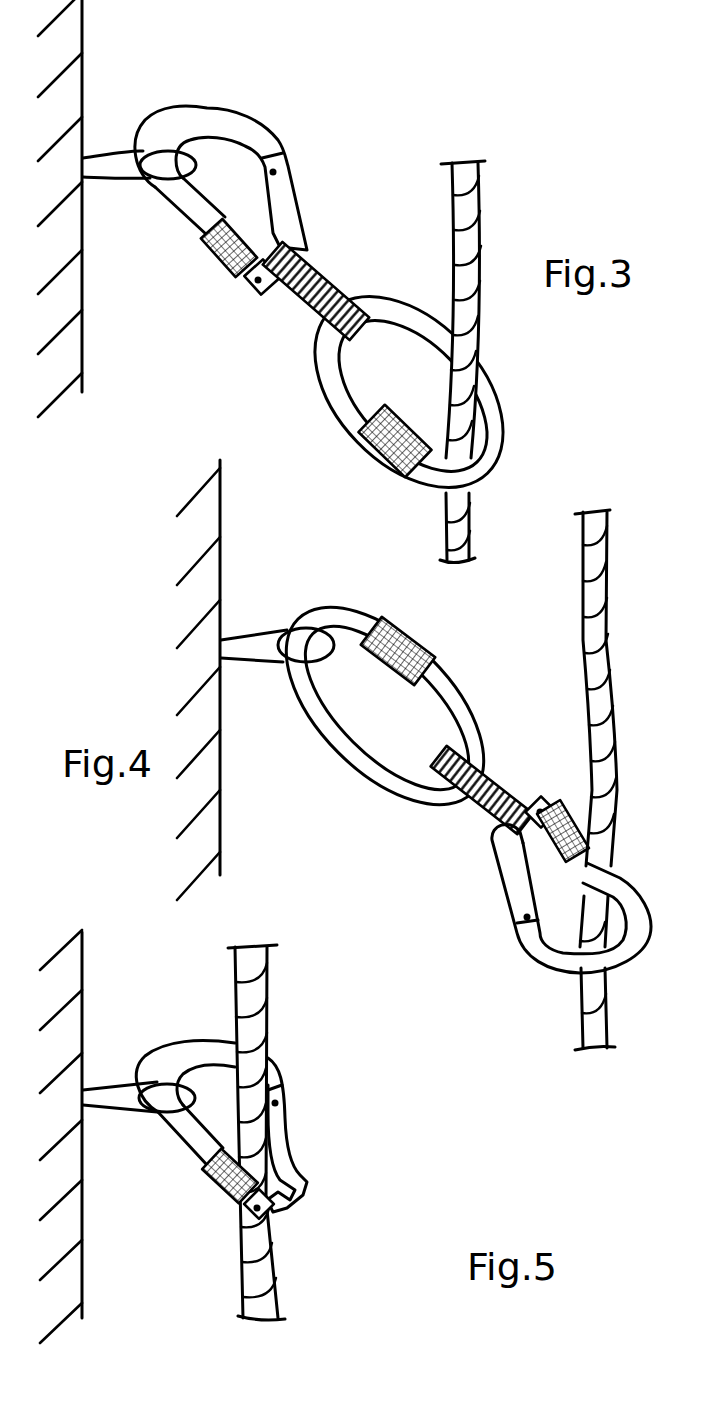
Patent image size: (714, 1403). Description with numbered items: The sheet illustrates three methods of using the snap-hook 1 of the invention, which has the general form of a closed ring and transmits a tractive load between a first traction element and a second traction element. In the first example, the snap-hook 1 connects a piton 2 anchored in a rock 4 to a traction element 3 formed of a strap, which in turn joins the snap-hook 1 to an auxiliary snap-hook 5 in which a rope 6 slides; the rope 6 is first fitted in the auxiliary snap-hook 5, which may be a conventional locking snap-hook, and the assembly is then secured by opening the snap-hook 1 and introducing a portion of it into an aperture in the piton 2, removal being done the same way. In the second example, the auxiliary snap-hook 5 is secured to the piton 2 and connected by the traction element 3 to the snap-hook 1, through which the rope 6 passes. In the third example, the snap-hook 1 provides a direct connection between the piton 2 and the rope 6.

In FIG. 3, the snap-hook 1 is at (257, 132).
In FIG. 4, the snap-hook 1 is at (513, 870).
In FIG. 5, the snap-hook 1 is at (214, 1186).
In FIG. 3, the piton 2 is at (127, 157).
In FIG. 4, the piton 2 is at (250, 656).
In FIG. 5, the piton 2 is at (103, 1090).
In FIG. 3, the traction element 3 is at (330, 247).
In FIG. 4, the traction element 3 is at (463, 813).
In FIG. 3, the rock 4 is at (75, 143).
In FIG. 4, the rock 4 is at (203, 772).
In FIG. 5, the rock 4 is at (73, 1203).
In FIG. 3, the auxiliary snap-hook 5 is at (380, 307).
In FIG. 4, the auxiliary snap-hook 5 is at (458, 714).
In FIG. 3, the rope 6 is at (460, 166).
In FIG. 4, the rope 6 is at (597, 713).
In FIG. 5, the rope 6 is at (243, 1010).